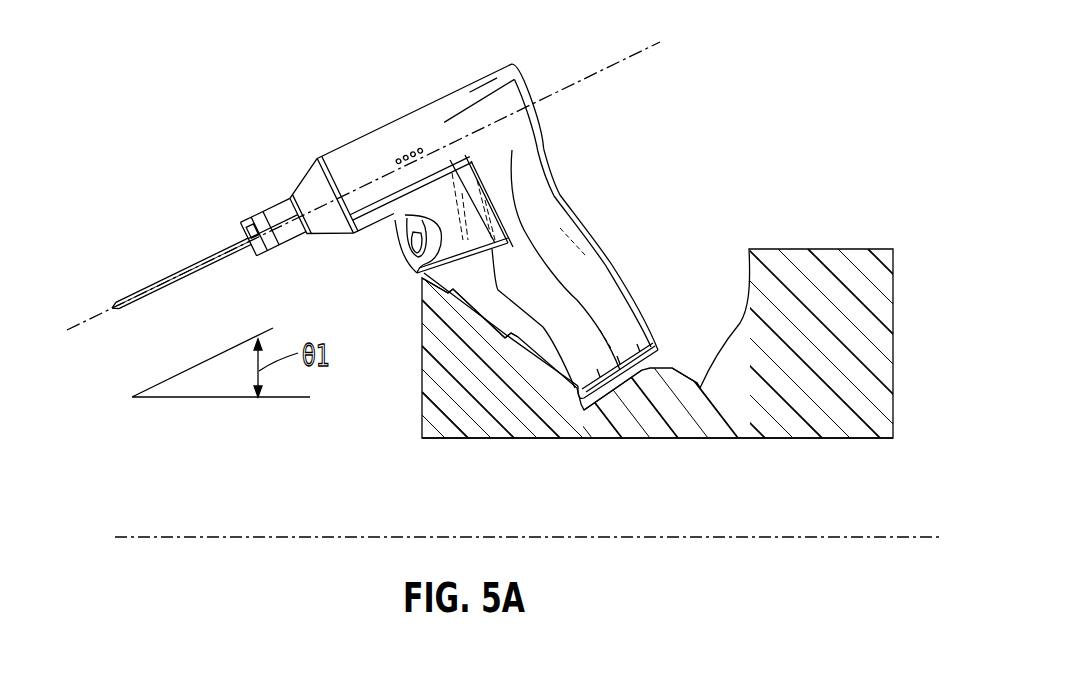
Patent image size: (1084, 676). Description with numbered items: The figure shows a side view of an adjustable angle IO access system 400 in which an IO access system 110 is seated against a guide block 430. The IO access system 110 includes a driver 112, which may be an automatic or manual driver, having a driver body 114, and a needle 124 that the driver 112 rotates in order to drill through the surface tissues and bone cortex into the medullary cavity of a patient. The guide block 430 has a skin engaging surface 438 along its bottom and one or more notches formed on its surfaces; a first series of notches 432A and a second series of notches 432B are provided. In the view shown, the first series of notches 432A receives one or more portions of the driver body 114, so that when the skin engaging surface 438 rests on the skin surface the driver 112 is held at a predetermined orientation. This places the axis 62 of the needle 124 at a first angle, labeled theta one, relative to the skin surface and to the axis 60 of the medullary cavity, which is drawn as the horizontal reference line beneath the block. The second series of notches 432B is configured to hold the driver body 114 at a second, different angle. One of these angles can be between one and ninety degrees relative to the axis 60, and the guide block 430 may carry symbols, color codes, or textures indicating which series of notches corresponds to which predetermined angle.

The adjustable angle IO access system 400 is at (236, 31).
The IO access system 110 is at (440, 60).
The driver 112 is at (500, 83).
The driver body 114 is at (434, 232).
The needle 124 is at (186, 267).
The axis of the needle 62 is at (90, 317).
The axis of the medullary cavity 60 is at (212, 537).
The guide block 430 is at (832, 248).
The first series of notches 432A is at (421, 302).
The second series of notches 432B is at (503, 342).
The skin engaging surface 438 is at (848, 439).